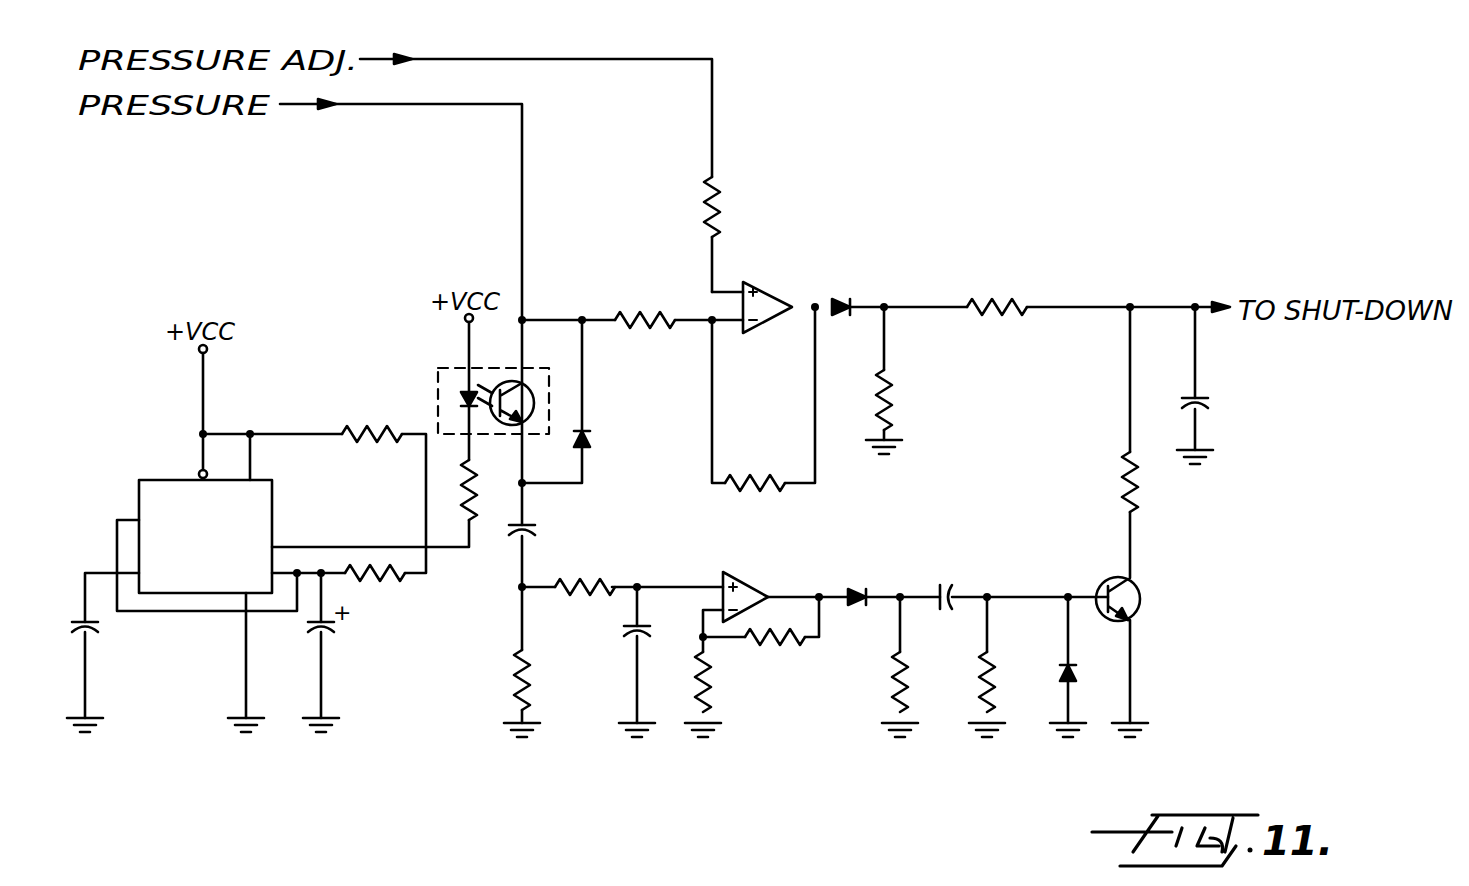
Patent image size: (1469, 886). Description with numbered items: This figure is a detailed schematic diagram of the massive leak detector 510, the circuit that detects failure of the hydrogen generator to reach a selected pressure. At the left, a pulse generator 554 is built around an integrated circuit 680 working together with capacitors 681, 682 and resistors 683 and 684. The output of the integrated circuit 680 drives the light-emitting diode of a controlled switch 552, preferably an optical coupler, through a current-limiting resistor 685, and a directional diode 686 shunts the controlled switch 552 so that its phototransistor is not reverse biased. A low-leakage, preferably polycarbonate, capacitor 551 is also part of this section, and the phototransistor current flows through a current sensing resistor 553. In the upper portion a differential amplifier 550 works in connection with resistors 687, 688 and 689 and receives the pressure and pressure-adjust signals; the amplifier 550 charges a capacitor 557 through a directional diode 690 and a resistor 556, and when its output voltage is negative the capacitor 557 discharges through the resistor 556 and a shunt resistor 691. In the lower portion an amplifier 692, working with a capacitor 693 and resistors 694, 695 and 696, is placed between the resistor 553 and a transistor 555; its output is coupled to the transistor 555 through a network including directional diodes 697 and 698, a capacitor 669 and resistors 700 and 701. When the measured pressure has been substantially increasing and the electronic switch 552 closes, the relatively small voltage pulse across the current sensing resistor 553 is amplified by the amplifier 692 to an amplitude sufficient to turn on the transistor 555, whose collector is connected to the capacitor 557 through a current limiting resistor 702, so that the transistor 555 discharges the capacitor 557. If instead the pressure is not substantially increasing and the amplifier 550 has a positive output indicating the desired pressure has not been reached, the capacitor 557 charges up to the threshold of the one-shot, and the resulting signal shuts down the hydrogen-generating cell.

The massive leak detector 510 is at (857, 232).
The differential amplifier 550 is at (765, 303).
The capacitor 551 is at (524, 531).
The controlled switch 552 is at (432, 399).
The current sensing resistor 553 is at (517, 660).
The pulse generator 554 is at (203, 737).
The transistor 555 is at (1094, 577).
The resistor 556 is at (997, 304).
The capacitor 557 is at (1202, 396).
The capacitor 669 is at (941, 588).
The integrated circuit 680 is at (158, 480).
The capacitor 681 is at (74, 637).
The capacitor 682 is at (310, 642).
The resistor 683 is at (375, 577).
The resistor 684 is at (372, 443).
The current-limiting resistor 685 is at (472, 523).
The directional diode 686 is at (589, 437).
The resistor 687 is at (712, 195).
The resistor 688 is at (653, 324).
The resistor 689 is at (753, 489).
The directional diode 690 is at (849, 304).
The shunt resistor 691 is at (888, 385).
The amplifier 692 is at (737, 584).
The capacitor 693 is at (632, 630).
The resistor 694 is at (586, 585).
The resistor 695 is at (706, 685).
The resistor 696 is at (770, 641).
The directional diode 697 is at (856, 588).
The directional diode 698 is at (1058, 680).
The resistor 700 is at (900, 680).
The resistor 701 is at (987, 680).
The current limiting resistor 702 is at (1127, 482).